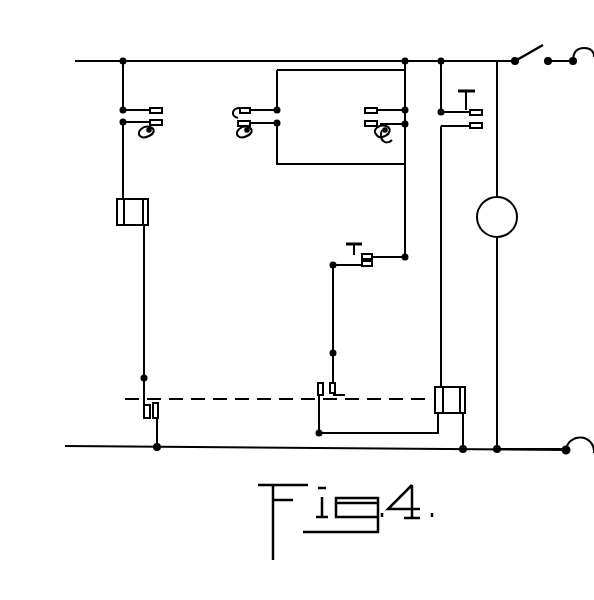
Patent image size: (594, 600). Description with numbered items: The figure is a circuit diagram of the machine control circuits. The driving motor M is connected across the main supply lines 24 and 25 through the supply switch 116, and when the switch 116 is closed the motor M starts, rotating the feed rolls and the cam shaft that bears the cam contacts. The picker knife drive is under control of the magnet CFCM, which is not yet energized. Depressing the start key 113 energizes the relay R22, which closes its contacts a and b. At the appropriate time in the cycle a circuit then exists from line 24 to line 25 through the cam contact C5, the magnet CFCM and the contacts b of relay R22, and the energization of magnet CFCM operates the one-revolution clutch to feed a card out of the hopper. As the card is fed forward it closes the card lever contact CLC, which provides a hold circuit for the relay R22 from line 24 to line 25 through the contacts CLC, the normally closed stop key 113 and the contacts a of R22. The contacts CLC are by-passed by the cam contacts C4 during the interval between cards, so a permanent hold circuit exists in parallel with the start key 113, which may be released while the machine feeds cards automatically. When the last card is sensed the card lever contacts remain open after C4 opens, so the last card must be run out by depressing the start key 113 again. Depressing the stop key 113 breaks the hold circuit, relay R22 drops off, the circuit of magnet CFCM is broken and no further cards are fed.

The supply switch 116 is at (534, 47).
The main supply line 24 is at (461, 61).
The start key / stop key 113 is at (361, 248).
The main supply line 25 is at (502, 450).
The cam contact C5 is at (146, 130).
The cam contact C4 is at (316, 117).
The card lever contact CLC is at (366, 159).
The picker knife drive magnet CFCM is at (162, 218).
The relay R22 is at (472, 382).
The contacts a of relay R22 a is at (378, 350).
The contacts b of relay R22 b is at (156, 400).
The driving motor M is at (497, 255).